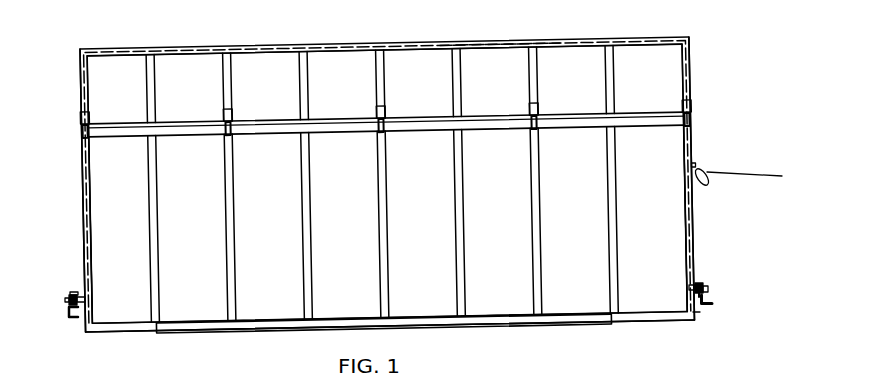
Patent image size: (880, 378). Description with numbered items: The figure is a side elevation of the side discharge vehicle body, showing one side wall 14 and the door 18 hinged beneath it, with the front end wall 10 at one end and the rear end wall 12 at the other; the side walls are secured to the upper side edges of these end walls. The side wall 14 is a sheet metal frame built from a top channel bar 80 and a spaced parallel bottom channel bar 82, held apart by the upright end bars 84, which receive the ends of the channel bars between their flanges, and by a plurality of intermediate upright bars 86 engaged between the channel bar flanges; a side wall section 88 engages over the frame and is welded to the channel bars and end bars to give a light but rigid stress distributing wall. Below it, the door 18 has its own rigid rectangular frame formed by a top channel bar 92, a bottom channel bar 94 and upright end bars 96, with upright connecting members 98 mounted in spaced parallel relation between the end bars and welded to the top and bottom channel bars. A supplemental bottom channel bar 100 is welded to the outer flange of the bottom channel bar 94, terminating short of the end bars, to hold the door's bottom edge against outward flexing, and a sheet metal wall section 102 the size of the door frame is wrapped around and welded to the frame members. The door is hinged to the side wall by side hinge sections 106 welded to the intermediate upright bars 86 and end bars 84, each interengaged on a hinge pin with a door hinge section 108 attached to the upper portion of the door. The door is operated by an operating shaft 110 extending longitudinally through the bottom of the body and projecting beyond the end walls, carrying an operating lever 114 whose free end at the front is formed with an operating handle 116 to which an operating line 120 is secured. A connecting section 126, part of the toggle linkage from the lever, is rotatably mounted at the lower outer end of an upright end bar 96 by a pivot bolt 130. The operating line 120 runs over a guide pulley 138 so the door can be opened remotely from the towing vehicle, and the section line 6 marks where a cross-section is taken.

The section line 6- 6 is at (430, 9).
The front end wall 10 is at (691, 142).
The rear end wall 12 is at (83, 258).
The side wall 14 is at (550, 42).
The door 18 is at (86, 232).
The top channel bar 80 is at (494, 48).
The bottom channel bar 82 is at (336, 116).
The upright end bar 84 is at (88, 82).
The intermediate upright bar 86 is at (156, 82).
The side wall section 88 is at (417, 57).
The top channel bar 92 is at (271, 136).
The bottom channel bar 94 is at (115, 333).
The upright end bar 96 is at (82, 168).
The upright connecting member 98 is at (225, 172).
The supplemental bottom channel bar 100 is at (275, 334).
The wall section 102 is at (490, 303).
The side hinge section 106 is at (387, 113).
The door hinge section 108 is at (388, 136).
The operating shaft 110 is at (69, 300).
The operating lever 114 is at (701, 314).
The operating handle 116 is at (714, 303).
The operating line 120 is at (698, 222).
The connecting section 126 is at (68, 313).
The pivot bolt 130 is at (72, 292).
The guide pulley 138 is at (710, 182).